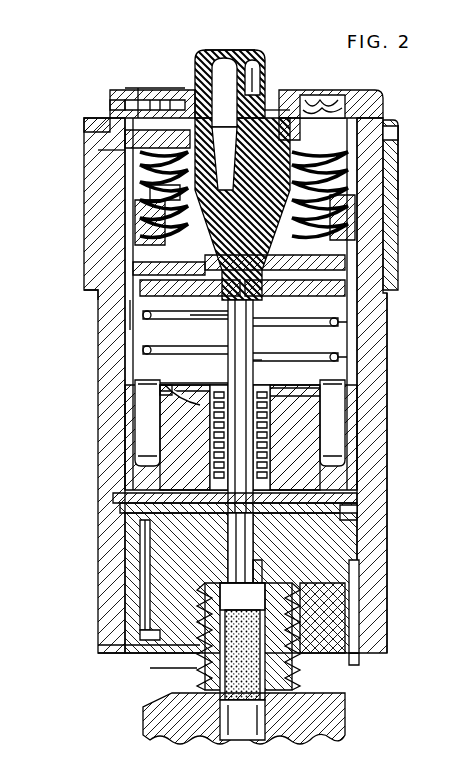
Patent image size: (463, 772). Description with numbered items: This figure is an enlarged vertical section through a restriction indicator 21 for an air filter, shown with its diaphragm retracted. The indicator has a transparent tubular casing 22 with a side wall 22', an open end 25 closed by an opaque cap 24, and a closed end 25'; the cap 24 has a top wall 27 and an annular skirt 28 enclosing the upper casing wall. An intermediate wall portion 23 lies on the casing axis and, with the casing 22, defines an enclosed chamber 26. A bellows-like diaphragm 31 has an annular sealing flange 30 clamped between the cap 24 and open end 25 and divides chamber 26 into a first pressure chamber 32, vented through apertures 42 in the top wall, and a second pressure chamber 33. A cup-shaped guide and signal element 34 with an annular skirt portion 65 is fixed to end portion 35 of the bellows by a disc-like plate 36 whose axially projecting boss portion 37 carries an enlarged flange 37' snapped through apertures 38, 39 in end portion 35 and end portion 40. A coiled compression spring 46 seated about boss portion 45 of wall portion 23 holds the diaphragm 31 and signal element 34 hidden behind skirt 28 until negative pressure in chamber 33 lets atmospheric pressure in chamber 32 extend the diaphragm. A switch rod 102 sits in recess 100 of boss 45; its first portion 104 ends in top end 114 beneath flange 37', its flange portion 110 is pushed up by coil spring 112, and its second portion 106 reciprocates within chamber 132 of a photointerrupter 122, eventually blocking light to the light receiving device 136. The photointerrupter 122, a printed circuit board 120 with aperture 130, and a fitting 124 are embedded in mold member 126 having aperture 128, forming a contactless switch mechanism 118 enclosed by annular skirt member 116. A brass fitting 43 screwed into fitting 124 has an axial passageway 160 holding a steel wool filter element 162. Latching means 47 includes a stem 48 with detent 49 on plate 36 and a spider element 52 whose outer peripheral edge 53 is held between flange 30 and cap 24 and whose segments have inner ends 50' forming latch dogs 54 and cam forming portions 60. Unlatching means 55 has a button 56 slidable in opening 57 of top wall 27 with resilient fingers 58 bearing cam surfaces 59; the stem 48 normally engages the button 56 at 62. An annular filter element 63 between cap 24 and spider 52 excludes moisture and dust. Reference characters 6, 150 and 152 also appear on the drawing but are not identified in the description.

The seal 6 is at (182, 116).
The restriction indicator 21 is at (412, 106).
The tubular casing 22 is at (396, 385).
The side wall 22' is at (409, 473).
The wall portion 23 is at (122, 478).
The cap member 24 is at (128, 87).
The open end 25 is at (75, 159).
The closed end 25' is at (125, 669).
The enclosed chamber 26 is at (135, 338).
The top wall 27 is at (138, 86).
The annular skirt 28 is at (84, 237).
The annular sealing flange 30 is at (125, 142).
The bellows-like diaphragm 31 is at (150, 215).
The first pressure chamber 32 is at (322, 108).
The second pressure chamber 33 is at (345, 336).
The guide and signal element 34 is at (133, 268).
The end portion 35 is at (190, 282).
The disc-like plate 36 is at (282, 282).
The boss portion 37 is at (275, 282).
The enlarged flange 37' is at (295, 357).
The aperture 38 is at (188, 312).
The aperture 39 is at (225, 300).
The end portion 40 is at (132, 305).
The apertures 42 is at (366, 95).
The fitting 43 is at (150, 733).
The boss portion 45 is at (165, 432).
The coiled compression spring 46 is at (345, 430).
The latching means 47 is at (262, 72).
The elongated stem 48 is at (282, 95).
The detent 49 is at (290, 118).
The inner ends 50' is at (233, 196).
The spider element 52 is at (398, 136).
The outer peripheral edge 53 is at (403, 120).
The latch dogs 54 is at (355, 200).
The unlatching means 55 is at (212, 45).
The button 56 is at (208, 47).
The opening 57 is at (200, 88).
The resilient fingers 58 is at (195, 124).
The cam surface 59 is at (95, 125).
The cam surface forming portions 60 is at (155, 190).
The engagement point 62 is at (247, 50).
The annular filter element 63 is at (115, 100).
The annular skirt portion 65 is at (98, 290).
The recess 100 is at (200, 387).
The switch rod 102 is at (256, 370).
The first portion 104 is at (336, 345).
The second portion 106 is at (228, 525).
The flange portion 110 is at (300, 385).
The coil compression spring 112 is at (270, 420).
The top end 114 is at (176, 386).
The annular skirt member 116 is at (118, 620).
The contactless switch mechanism 118 is at (152, 668).
The printed circuit board 120 is at (365, 508).
The photointerrupter 122 is at (300, 553).
The fitting 124 is at (184, 652).
The mold member 126 is at (355, 605).
The aperture 128 is at (135, 498).
The aperture 130 is at (135, 510).
The chamber 132 is at (242, 641).
The light receiving device 136 is at (225, 550).
The tube 150 is at (362, 662).
The port 152 is at (150, 628).
The axial passageway 160 is at (268, 672).
The filter element 162 is at (227, 731).